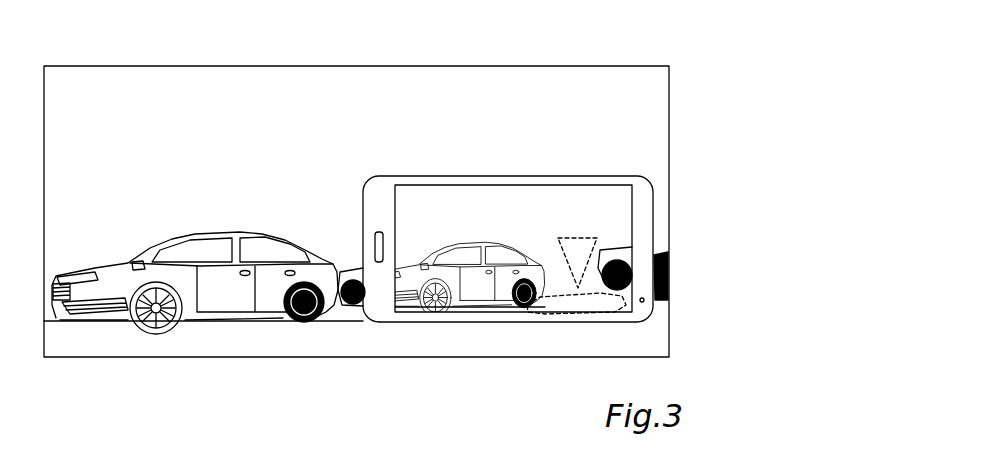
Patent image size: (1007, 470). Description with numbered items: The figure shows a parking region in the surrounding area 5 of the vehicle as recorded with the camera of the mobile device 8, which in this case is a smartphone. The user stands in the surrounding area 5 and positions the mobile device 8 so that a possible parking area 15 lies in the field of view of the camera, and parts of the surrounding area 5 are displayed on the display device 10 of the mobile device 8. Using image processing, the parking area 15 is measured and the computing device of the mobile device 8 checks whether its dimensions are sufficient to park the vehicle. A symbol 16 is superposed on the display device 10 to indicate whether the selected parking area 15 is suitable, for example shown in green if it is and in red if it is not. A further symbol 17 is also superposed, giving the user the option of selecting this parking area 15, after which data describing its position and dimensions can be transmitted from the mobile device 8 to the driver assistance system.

The surrounding area 5 is at (572, 120).
The mobile device 8 is at (650, 178).
The display device 10 is at (606, 255).
The parking area 15 is at (567, 321).
The symbol 16 is at (590, 303).
The further symbol 17 is at (600, 249).